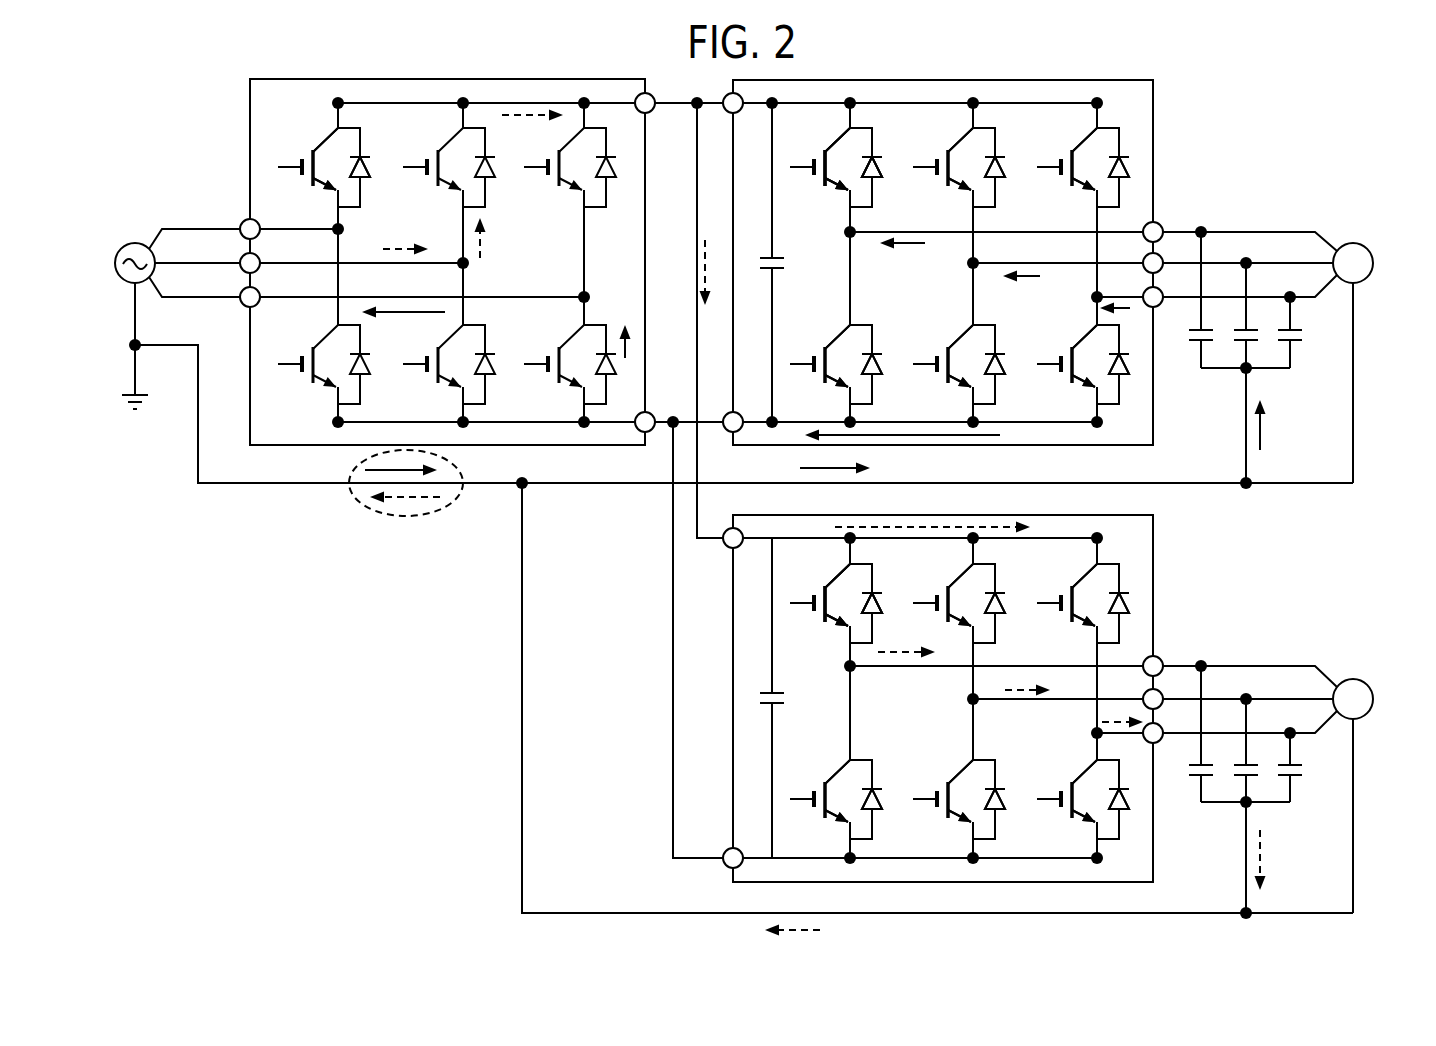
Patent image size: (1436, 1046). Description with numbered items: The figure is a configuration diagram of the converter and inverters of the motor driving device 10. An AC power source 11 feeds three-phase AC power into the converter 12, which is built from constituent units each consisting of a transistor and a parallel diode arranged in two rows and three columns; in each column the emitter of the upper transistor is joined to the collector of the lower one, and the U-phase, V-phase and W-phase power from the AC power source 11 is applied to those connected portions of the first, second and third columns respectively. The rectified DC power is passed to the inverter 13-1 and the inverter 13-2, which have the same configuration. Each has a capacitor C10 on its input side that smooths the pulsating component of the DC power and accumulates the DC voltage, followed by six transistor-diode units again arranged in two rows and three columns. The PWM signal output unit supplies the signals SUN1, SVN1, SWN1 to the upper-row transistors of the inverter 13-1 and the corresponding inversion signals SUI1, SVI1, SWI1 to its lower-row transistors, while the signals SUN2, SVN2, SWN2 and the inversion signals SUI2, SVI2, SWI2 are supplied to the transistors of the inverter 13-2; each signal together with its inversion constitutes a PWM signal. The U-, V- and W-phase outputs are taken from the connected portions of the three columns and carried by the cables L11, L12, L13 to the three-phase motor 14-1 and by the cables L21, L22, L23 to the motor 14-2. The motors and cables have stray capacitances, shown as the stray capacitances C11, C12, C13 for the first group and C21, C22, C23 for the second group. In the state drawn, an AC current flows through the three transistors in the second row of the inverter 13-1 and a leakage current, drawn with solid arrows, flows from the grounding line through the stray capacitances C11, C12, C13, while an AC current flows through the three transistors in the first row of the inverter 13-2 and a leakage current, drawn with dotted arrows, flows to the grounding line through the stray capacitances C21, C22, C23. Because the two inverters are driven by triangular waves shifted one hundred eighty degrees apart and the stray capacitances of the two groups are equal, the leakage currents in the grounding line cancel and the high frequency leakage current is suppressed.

The motor driving device 10 is at (1300, 118).
The AC power source 11 is at (121, 248).
The converter 12 is at (420, 262).
The inverter 13-1 is at (970, 469).
The inverter 13-2 is at (970, 698).
The motor 14-1 is at (1345, 243).
The motor 14-2 is at (1345, 679).
The DC link capacitor C10 is at (789, 480).
The stray capacitance C11 is at (1212, 301).
The stray capacitance C12 is at (1257, 373).
The stray capacitance C13 is at (1301, 333).
The stray capacitance C21 is at (1212, 735).
The stray capacitance C22 is at (1257, 806).
The stray capacitance C23 is at (1301, 769).
The cable L11 is at (1218, 230).
The cable L12 is at (1262, 262).
The cable L13 is at (1275, 295).
The cable L21 is at (1218, 664).
The cable L22 is at (1262, 697).
The cable L23 is at (1275, 731).
The signal SUN1 is at (790, 177).
The signal SVN1 is at (913, 177).
The signal SWN1 is at (1037, 177).
The inversion signal SUI1 is at (790, 374).
The inversion signal SVI1 is at (913, 374).
The inversion signal SWI1 is at (1037, 374).
The signal SUN2 is at (790, 613).
The signal SVN2 is at (913, 613).
The signal SWN2 is at (1037, 613).
The inversion signal SUI2 is at (790, 809).
The inversion signal SVI2 is at (913, 809).
The inversion signal SWI2 is at (1037, 809).